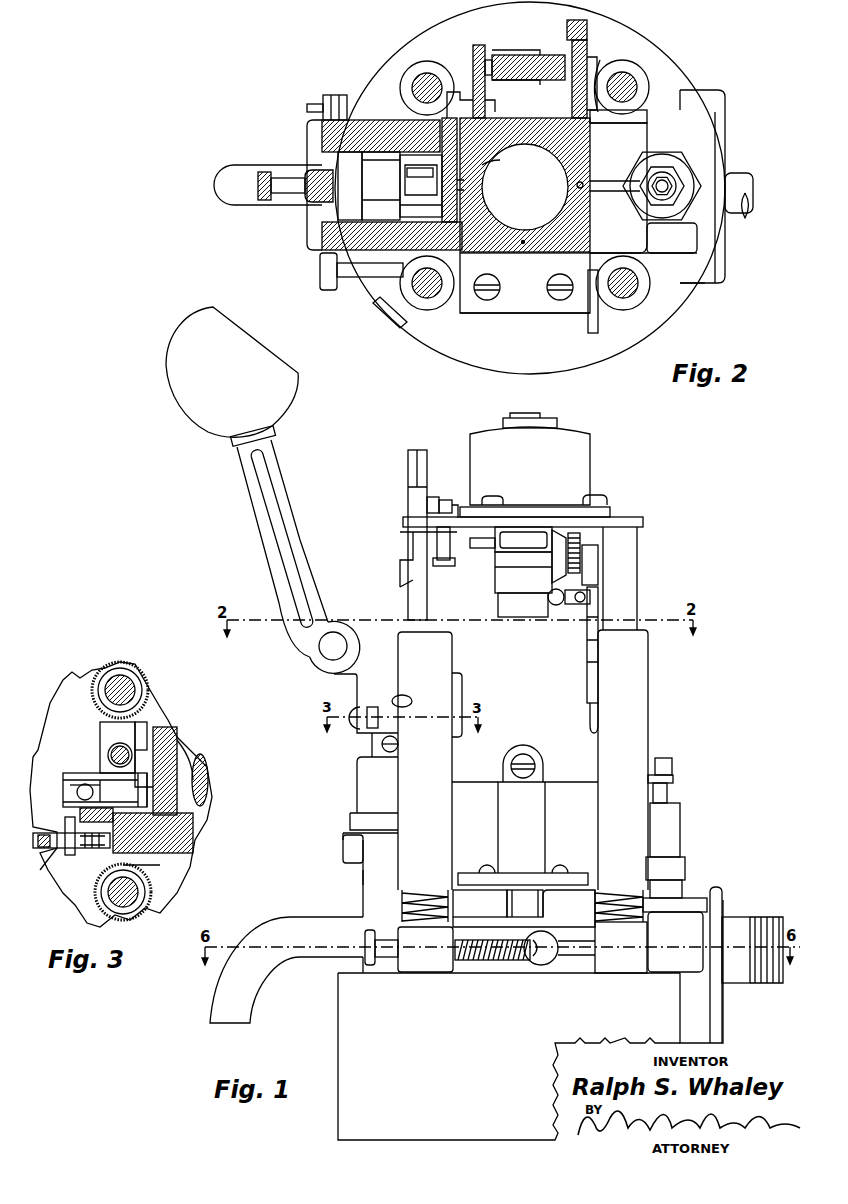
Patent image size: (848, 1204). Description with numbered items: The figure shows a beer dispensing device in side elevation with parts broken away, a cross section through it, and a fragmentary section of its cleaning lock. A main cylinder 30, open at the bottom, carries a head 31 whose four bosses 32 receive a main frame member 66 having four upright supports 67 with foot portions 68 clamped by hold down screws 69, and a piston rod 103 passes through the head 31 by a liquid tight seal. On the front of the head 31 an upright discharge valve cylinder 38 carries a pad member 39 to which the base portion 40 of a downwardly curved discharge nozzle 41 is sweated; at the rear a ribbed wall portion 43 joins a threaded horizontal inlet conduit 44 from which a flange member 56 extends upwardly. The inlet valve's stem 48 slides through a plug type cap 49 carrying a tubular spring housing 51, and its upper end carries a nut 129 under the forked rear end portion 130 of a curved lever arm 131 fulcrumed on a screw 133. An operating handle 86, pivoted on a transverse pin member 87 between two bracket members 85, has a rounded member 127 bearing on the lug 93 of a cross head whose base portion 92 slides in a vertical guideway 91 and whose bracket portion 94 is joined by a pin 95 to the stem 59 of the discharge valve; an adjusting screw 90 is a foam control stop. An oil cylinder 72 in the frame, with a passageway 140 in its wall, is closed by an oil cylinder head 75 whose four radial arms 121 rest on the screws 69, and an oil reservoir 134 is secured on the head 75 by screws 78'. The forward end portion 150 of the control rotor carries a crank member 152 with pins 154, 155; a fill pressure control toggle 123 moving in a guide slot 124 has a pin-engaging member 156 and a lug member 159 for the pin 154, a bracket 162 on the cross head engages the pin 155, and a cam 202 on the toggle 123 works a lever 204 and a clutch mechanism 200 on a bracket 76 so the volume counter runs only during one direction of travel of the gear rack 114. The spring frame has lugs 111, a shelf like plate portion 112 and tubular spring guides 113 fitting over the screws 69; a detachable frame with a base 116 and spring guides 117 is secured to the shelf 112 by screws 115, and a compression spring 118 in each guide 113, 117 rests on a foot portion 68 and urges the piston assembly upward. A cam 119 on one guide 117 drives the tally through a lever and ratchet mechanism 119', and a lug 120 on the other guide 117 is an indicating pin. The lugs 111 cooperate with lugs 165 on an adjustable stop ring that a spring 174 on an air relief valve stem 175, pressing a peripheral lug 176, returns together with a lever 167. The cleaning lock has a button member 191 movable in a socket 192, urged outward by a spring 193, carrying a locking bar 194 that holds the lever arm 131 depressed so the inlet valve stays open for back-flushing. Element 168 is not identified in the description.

In FIG. 1, the main cylinder 30 is at (350, 1033).
In FIG. 2, the head 31 is at (417, 43).
In FIG. 3, the head 31 is at (121, 787).
In FIG. 1, the bosses 32 is at (427, 966).
In FIG. 1, the discharge valve cylinder 38 is at (373, 895).
In FIG. 1, the pad member 39 is at (360, 878).
In FIG. 1, the base portion of discharge nozzle 40 is at (347, 863).
In FIG. 2, the discharge nozzle 41 is at (243, 205).
In FIG. 1, the discharge nozzle 41 is at (272, 927).
In FIG. 1, the ribbed wall portion 43 is at (713, 1030).
In FIG. 2, the inlet conduit 44 is at (745, 187).
In FIG. 1, the inlet conduit 44 is at (755, 982).
In FIG. 2, the valve stem 48 is at (680, 181).
In FIG. 1, the valve stem 48 is at (670, 795).
In FIG. 2, the plug type cap 49 is at (695, 165).
In FIG. 2, the spring housing 51 is at (750, 205).
In FIG. 1, the spring housing 51 is at (680, 827).
In FIG. 1, the flange member 56 is at (722, 897).
In FIG. 3, the valve stem 59 is at (77, 792).
In FIG. 2, the main frame member 66 is at (572, 240).
In FIG. 1, the main frame member 66 is at (577, 715).
In FIG. 3, the main frame member 66 is at (193, 843).
In FIG. 1, the upright supports 67 is at (453, 898).
In FIG. 3, the upright supports 67 is at (108, 736).
In FIG. 1, the foot portion 68 is at (427, 937).
In FIG. 3, the foot portion 68 is at (100, 722).
In FIG. 2, the hold down screws 69 is at (413, 78).
In FIG. 1, the hold down screws 69 is at (413, 605).
In FIG. 3, the hold down screws 69 is at (130, 685).
In FIG. 2, the oil cylinder 72 is at (525, 194).
In FIG. 3, the oil cylinder 72 is at (193, 767).
In FIG. 1, the oil cylinder head 75 is at (503, 561).
In FIG. 1, the bracket 76 is at (521, 612).
In FIG. 1, the screws 78' is at (535, 503).
In FIG. 2, the bracket members 85 is at (348, 160).
In FIG. 1, the bracket members 85 is at (405, 583).
In FIG. 2, the operating handle 86 is at (285, 202).
In FIG. 1, the operating handle 86 is at (292, 645).
In FIG. 1, the transverse pin member 87 is at (332, 660).
In FIG. 1, the adjusting screw 90 is at (408, 512).
In FIG. 2, the vertical guideway 91 is at (424, 186).
In FIG. 3, the vertical guideway 91 is at (135, 790).
In FIG. 2, the base portion of cross head 92 is at (457, 183).
In FIG. 3, the base portion of cross head 92 is at (173, 813).
In FIG. 2, the lug 93 is at (381, 186).
In FIG. 3, the bracket portion 94 is at (98, 765).
In FIG. 3, the pin 95 is at (87, 770).
In FIG. 3, the piston rod 103 is at (207, 777).
In FIG. 1, the lugs 111 is at (505, 900).
In FIG. 2, the shelf like plate portion 112 is at (552, 310).
In FIG. 1, the shelf like plate portion 112 is at (575, 868).
In FIG. 2, the tubular spring guides 113 is at (440, 60).
In FIG. 3, the tubular spring guides 113 is at (147, 693).
In FIG. 2, the gear rack 114 is at (602, 95).
In FIG. 2, the screws 115 is at (548, 288).
In FIG. 1, the screws 115 is at (498, 868).
In FIG. 2, the base 116 is at (453, 312).
In FIG. 1, the base 116 is at (487, 865).
In FIG. 2, the tubular spring guides 117 is at (403, 295).
In FIG. 1, the tubular spring guides 117 is at (445, 660).
In FIG. 3, the tubular spring guides 117 is at (157, 893).
In FIG. 1, the compression spring 118 is at (427, 893).
In FIG. 3, the compression spring 118 is at (122, 670).
In FIG. 2, the cam 119 is at (578, 315).
In FIG. 1, the cam 119 is at (637, 660).
In FIG. 1, the lever and ratchet mechanism 119' is at (613, 567).
In FIG. 2, the lug 120 is at (388, 320).
In FIG. 1, the lug 120 is at (395, 695).
In FIG. 1, the radial arms 121 is at (640, 520).
In FIG. 2, the fill pressure control toggle 123 is at (433, 140).
In FIG. 3, the fill pressure control toggle 123 is at (130, 750).
In FIG. 2, the guide slot 124 is at (417, 140).
In FIG. 2, the rounded member 127 is at (310, 247).
In FIG. 2, the nut 129 is at (663, 180).
In FIG. 1, the nut 129 is at (673, 765).
In FIG. 2, the forked rear end portion 130 is at (684, 165).
In FIG. 1, the forked rear end portion 130 is at (673, 778).
In FIG. 2, the lever arm 131 is at (610, 186).
In FIG. 3, the lever arm 131 is at (112, 791).
In FIG. 1, the screw 133 is at (523, 753).
In FIG. 1, the oil reservoir 134 is at (577, 472).
In FIG. 2, the passageway 140 is at (577, 185).
In FIG. 1, the forward end portion of rotor 150 is at (478, 540).
In FIG. 1, the crank member 152 is at (450, 512).
In FIG. 1, the pin 154 is at (447, 507).
In FIG. 1, the pin 155 is at (440, 555).
In FIG. 1, the pin-engaging member 156 is at (432, 497).
In FIG. 1, the lug member 159 is at (437, 535).
In FIG. 2, the bracket 162 is at (488, 172).
In FIG. 1, the lugs 165 is at (530, 920).
In FIG. 2, the lever 167 is at (317, 108).
In FIG. 2, the pin head 168 is at (350, 103).
In FIG. 2, the spring 174 is at (350, 275).
In FIG. 1, the spring 174 is at (387, 955).
In FIG. 1, the air relief valve stem 175 is at (483, 960).
In FIG. 1, the lug 176 is at (543, 967).
In FIG. 1, the button member 191 is at (352, 732).
In FIG. 3, the button member 191 is at (50, 833).
In FIG. 3, the socket 192 is at (93, 880).
In FIG. 3, the spring 193 is at (80, 850).
In FIG. 3, the locking bar 194 is at (77, 857).
In FIG. 2, the clutch mechanism 200 is at (525, 43).
In FIG. 2, the cam 202 is at (422, 180).
In FIG. 2, the lever 204 is at (498, 109).